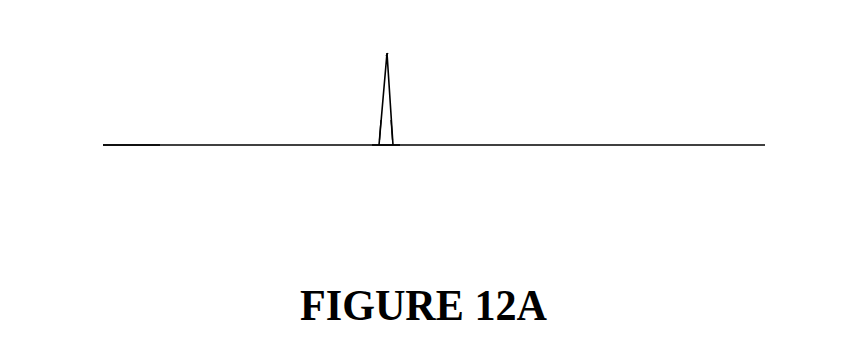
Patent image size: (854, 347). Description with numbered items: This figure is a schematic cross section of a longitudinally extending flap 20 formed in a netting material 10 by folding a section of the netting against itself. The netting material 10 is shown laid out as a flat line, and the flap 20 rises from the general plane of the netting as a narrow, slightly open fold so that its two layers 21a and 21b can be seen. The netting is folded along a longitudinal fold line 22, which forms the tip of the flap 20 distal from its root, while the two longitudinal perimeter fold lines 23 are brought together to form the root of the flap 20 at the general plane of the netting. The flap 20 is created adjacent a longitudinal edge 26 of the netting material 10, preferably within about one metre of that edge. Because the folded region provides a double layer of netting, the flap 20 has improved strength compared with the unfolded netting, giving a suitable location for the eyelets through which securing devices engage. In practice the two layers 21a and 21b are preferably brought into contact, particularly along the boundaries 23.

The netting material 10 is at (683, 145).
The longitudinal edge 26 is at (103, 145).
The longitudinal flap 20 is at (392, 82).
The longitudinal fold line 22 is at (387, 53).
The first layer of the netting material 21a is at (380, 117).
The second layer of the netting material 21b is at (392, 117).
The perimeter fold lines 23 is at (379, 144).